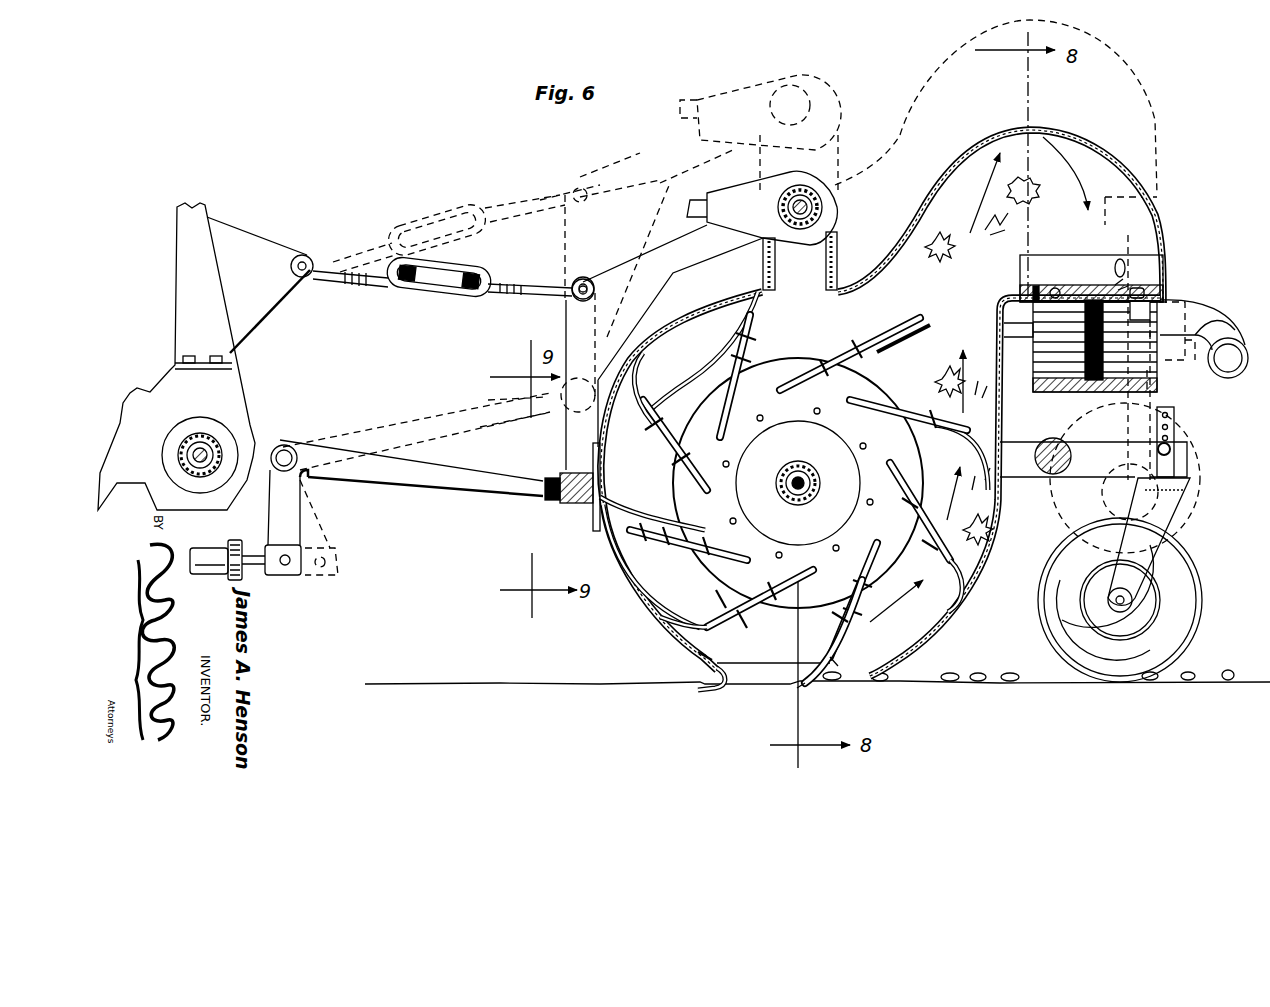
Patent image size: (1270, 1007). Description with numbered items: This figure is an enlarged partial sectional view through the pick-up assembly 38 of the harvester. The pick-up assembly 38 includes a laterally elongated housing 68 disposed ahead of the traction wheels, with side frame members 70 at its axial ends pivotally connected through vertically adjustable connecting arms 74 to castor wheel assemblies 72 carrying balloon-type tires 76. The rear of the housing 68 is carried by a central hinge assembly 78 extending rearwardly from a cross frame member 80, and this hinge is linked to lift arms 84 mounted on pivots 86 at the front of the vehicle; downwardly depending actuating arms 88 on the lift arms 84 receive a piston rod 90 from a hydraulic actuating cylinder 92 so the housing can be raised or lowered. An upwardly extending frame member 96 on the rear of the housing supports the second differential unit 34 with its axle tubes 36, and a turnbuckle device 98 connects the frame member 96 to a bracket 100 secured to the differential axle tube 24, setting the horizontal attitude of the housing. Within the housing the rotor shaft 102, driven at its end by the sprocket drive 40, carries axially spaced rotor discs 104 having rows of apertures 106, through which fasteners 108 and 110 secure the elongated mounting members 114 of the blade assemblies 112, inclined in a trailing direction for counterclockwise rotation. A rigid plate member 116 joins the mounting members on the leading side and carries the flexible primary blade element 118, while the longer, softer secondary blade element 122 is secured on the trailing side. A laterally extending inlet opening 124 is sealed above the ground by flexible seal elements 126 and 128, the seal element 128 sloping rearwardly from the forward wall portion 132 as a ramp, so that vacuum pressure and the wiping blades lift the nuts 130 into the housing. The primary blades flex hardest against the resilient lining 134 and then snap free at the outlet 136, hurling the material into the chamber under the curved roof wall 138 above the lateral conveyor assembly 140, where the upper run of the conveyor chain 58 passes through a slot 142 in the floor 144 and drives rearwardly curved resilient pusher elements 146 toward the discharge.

The differential axle tube 24 is at (148, 390).
The second differential unit 34 is at (742, 192).
The axle tubes 36 is at (197, 430).
The pick-up assembly 38 is at (640, 611).
The sprocket drive 40 is at (840, 256).
The conveyor chain 58 is at (1114, 358).
The housing 68 is at (712, 306).
The side frame members 70 is at (1020, 470).
The castor wheel assemblies 72 is at (1178, 515).
The connecting arms 74 is at (1175, 445).
The balloon-type tires 76 is at (1175, 590).
The central hinge assembly 78 is at (572, 507).
The cross frame member 80 is at (593, 455).
The lift arms 84 is at (437, 480).
The pivots 86 is at (290, 447).
The actuating arms 88 is at (300, 508).
The piston rod 90 is at (268, 568).
The bolt 92 is at (208, 556).
The frame member 96 is at (578, 331).
The turnbuckle device 98 is at (455, 272).
The bracket 100 is at (243, 248).
The rotor shaft 102 is at (810, 468).
The rotor discs 104 is at (790, 595).
The apertures 106 is at (742, 385).
The fasteners 108 is at (688, 445).
The fasteners 110 is at (735, 372).
The blade assemblies 112 is at (826, 355).
The mounting member 114 is at (715, 552).
The plate member 116 is at (676, 545).
The primary blade element 118 is at (633, 535).
The secondary blade element 122 is at (651, 492).
The inlet opening 124 is at (885, 340).
The seal element 126 is at (700, 678).
The seal element 128 is at (867, 670).
The nuts 130 is at (858, 660).
The forward wall portion 132 is at (1005, 405).
The resilient lining 134 is at (985, 372).
The outlet 136 is at (1006, 341).
The curved roof wall 138 is at (1100, 143).
The lateral conveyor assembly 140 is at (1138, 272).
The slot 142 is at (1091, 265).
The floor 144 is at (1160, 303).
The pusher elements 146 is at (1045, 290).